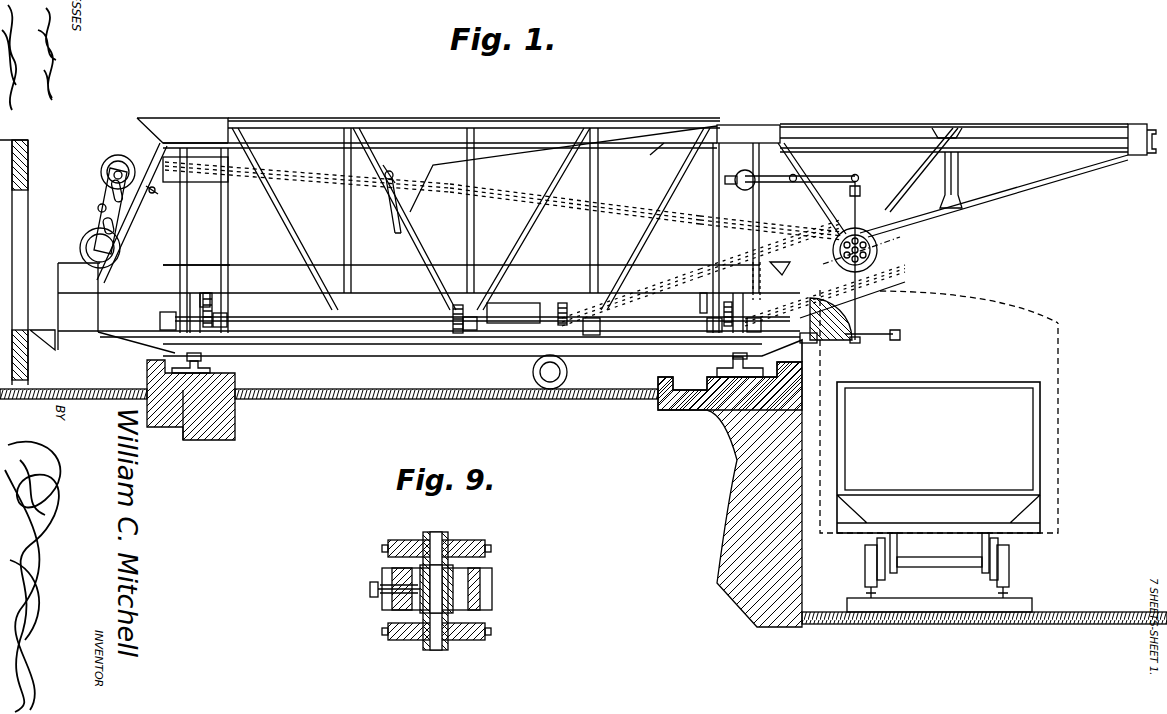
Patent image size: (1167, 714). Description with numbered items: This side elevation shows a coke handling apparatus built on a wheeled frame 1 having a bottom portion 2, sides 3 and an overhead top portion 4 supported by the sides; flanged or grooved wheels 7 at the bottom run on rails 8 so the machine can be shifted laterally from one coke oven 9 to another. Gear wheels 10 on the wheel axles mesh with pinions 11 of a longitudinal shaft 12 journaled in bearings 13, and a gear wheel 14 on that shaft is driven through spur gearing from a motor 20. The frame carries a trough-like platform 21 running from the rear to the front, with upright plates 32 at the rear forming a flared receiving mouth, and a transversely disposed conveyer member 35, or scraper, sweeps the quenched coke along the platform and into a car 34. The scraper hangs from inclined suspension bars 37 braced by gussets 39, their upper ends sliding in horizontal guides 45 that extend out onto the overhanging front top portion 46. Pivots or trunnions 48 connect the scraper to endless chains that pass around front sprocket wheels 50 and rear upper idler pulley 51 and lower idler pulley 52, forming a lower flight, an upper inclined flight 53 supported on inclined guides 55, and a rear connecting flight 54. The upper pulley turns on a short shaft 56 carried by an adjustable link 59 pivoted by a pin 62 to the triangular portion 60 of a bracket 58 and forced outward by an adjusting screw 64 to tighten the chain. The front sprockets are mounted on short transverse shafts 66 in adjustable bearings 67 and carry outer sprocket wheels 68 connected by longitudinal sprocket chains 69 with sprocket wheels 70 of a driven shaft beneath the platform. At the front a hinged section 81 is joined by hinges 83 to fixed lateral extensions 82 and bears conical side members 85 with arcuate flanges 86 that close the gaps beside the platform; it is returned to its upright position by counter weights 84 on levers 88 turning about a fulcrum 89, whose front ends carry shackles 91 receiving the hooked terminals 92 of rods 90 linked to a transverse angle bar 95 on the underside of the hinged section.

In FIG. 1, the wheeled frame 1 is at (209, 240).
In FIG. 1, the bottom portion 2 is at (335, 348).
In FIG. 1, the sides 3 is at (344, 228).
In FIG. 1, the overhead top portion 4 is at (400, 120).
In FIG. 1, the flanged or grooved wheels 7 is at (199, 293).
In FIG. 1, the rails 8 is at (210, 370).
In FIG. 1, the coke oven 9 is at (20, 230).
In FIG. 1, the gear wheels 10 is at (220, 289).
In FIG. 1, the pinions 11 is at (201, 355).
In FIG. 1, the longitudinal shaft 12 is at (273, 318).
In FIG. 1, the bearings 13 is at (160, 320).
In FIG. 1, the gear wheel 14 is at (453, 317).
In FIG. 1, the motor 20 is at (520, 297).
In FIG. 1, the platform 21 is at (370, 300).
In FIG. 1, the upright plates 32 is at (67, 298).
In FIG. 1, the car 34 is at (939, 451).
In FIG. 1, the conveyer member 35 is at (392, 213).
In FIG. 1, the suspension bars 37 is at (512, 162).
In FIG. 1, the gussets 39 is at (413, 203).
In FIG. 1, the horizontal guides 45 is at (663, 143).
In FIG. 1, the front top portion 46 is at (1080, 115).
In FIG. 1, the pivots or trunnions 48 is at (392, 166).
In FIG. 9, the front sprocket wheels 50 is at (490, 540).
In FIG. 1, the upper idler pulley 51 is at (110, 157).
In FIG. 1, the lower idler pulley 52 is at (87, 250).
In FIG. 1, the upper inclined flight 53 is at (817, 223).
In FIG. 1, the rear connecting flight 54 is at (85, 203).
In FIG. 1, the inclined guides 55 is at (652, 208).
In FIG. 1, the short shaft 56 is at (113, 173).
In FIG. 1, the bracket 58 is at (100, 217).
In FIG. 1, the adjustable link 59 is at (122, 203).
In FIG. 1, the triangular portion 60 is at (113, 228).
In FIG. 1, the pin 62 is at (102, 205).
In FIG. 1, the adjusting screw 64 is at (153, 190).
In FIG. 1, the short transverse shafts 66 is at (815, 238).
In FIG. 9, the short transverse shafts 66 is at (443, 650).
In FIG. 9, the adjustable bearings 67 is at (425, 570).
In FIG. 1, the outer sprocket wheels 68 is at (880, 260).
In FIG. 9, the outer sprocket wheels 68 is at (475, 640).
In FIG. 1, the longitudinal sprocket chains 69 is at (692, 270).
In FIG. 1, the sprocket wheels 70 is at (537, 372).
In FIG. 1, the hinged section 81 is at (895, 336).
In FIG. 1, the fixed lateral extensions 82 is at (833, 340).
In FIG. 1, the hinges 83 is at (831, 319).
In FIG. 1, the counter weights 84 is at (747, 172).
In FIG. 1, the conical side members 85 is at (850, 317).
In FIG. 1, the arcuate flanges 86 is at (860, 287).
In FIG. 1, the levers 88 is at (818, 177).
In FIG. 1, the fulcrum 89 is at (792, 181).
In FIG. 1, the rods 90 is at (858, 203).
In FIG. 1, the shackles 91 is at (858, 178).
In FIG. 1, the hooked terminals 92 is at (850, 192).
In FIG. 1, the angle bar 95 is at (853, 345).